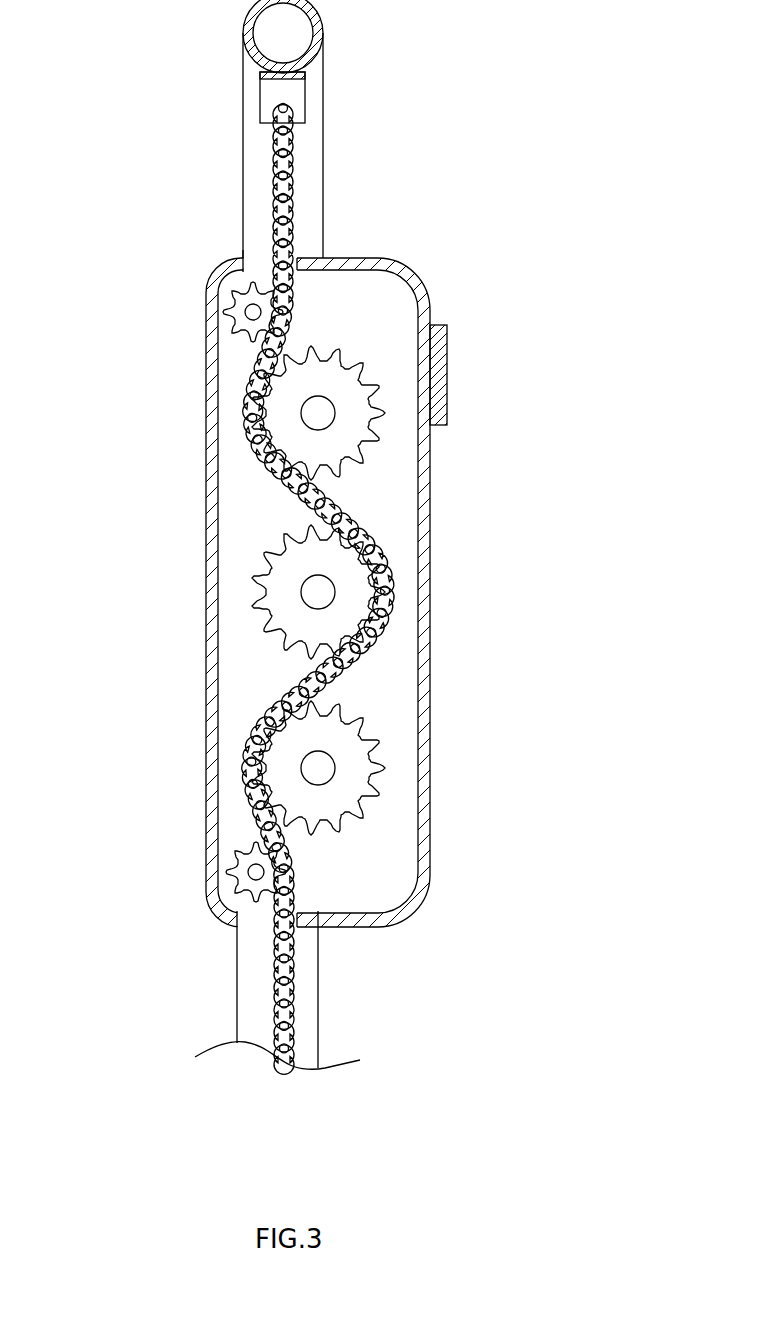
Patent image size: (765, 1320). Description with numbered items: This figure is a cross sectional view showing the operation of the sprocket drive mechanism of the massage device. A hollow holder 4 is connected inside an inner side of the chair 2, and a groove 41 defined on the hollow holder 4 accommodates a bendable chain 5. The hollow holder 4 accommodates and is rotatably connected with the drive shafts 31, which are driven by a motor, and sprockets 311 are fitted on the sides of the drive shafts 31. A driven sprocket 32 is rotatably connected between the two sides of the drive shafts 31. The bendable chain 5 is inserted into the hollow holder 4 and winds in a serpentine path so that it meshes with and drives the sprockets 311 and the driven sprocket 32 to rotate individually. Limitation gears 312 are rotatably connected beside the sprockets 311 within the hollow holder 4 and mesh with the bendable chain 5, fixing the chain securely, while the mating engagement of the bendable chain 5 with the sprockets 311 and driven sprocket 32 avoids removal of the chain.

The chair 2 is at (322, 40).
The hollow holder 4 is at (205, 375).
The groove 41 is at (235, 270).
The bendable chain 5 is at (247, 775).
The drive shaft 31 is at (410, 544).
The sprocket 311 is at (370, 370).
The limitation gear 312 is at (240, 293).
The driven sprocket 32 is at (263, 590).